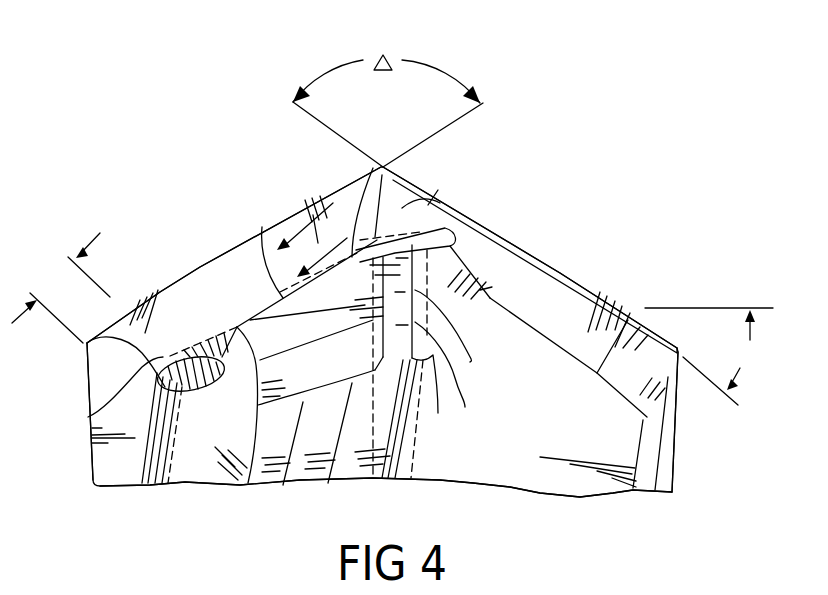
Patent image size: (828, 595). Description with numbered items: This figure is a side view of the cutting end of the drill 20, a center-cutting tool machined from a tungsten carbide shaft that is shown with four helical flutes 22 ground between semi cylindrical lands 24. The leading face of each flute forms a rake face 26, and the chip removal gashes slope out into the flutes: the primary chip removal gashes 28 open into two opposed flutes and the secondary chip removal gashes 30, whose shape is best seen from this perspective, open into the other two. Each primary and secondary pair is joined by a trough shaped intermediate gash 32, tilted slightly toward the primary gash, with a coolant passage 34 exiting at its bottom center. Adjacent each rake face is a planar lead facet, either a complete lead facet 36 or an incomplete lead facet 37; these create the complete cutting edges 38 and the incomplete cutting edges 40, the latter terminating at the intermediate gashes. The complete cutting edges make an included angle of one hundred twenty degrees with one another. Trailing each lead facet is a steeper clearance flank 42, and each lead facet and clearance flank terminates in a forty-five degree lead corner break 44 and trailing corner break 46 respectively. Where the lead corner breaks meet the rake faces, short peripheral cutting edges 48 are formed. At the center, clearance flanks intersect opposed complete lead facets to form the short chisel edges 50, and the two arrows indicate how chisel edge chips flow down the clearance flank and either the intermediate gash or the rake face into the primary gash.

The drill 20 is at (627, 243).
The flutes 22 is at (196, 468).
The land 24 is at (90, 397).
The rake faces 26 is at (182, 293).
The primary chip removal gashes 28 is at (90, 413).
The secondary chip removal gashes 30 is at (468, 360).
The intermediate gash 32 is at (402, 208).
The coolant passages 34 is at (410, 485).
The complete lead facets 36 is at (213, 260).
The incomplete lead facets 37 is at (482, 227).
The complete cutting edges 38 is at (283, 218).
The incomplete cutting edges 40 is at (445, 335).
The clearance flank 42 is at (262, 227).
The lead corner break 44 is at (107, 325).
The trailing corner break 46 is at (270, 382).
The peripheral cutting edges 48 is at (117, 318).
The chisel edges 50 is at (377, 168).